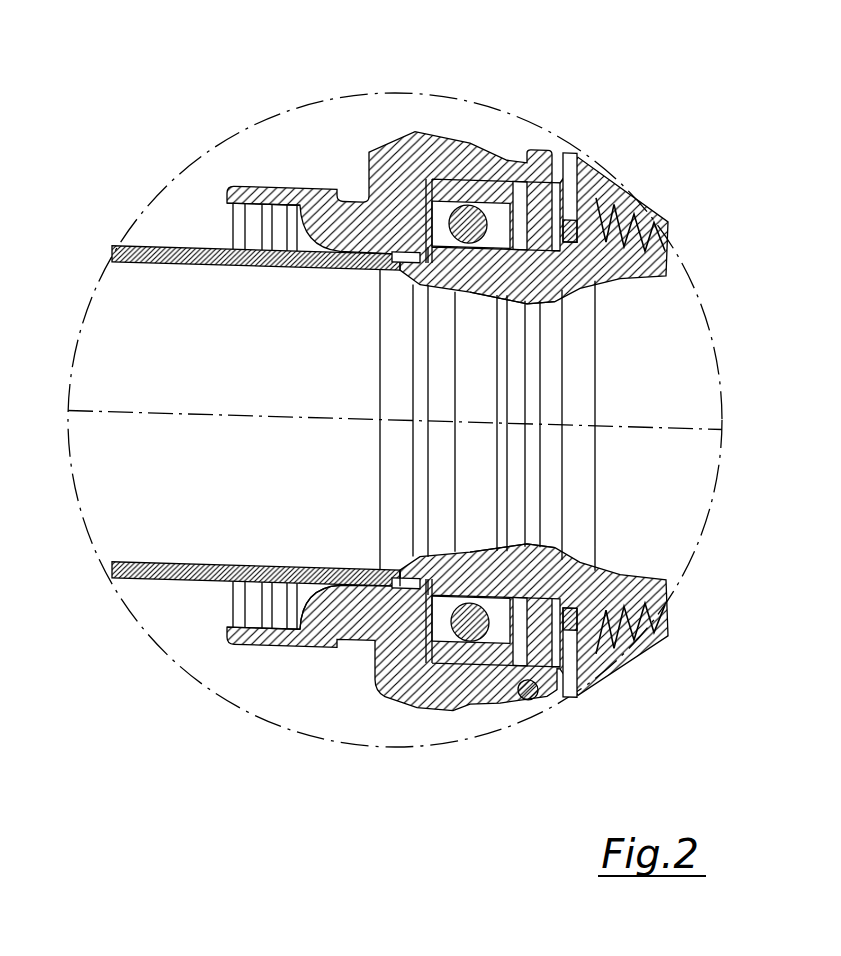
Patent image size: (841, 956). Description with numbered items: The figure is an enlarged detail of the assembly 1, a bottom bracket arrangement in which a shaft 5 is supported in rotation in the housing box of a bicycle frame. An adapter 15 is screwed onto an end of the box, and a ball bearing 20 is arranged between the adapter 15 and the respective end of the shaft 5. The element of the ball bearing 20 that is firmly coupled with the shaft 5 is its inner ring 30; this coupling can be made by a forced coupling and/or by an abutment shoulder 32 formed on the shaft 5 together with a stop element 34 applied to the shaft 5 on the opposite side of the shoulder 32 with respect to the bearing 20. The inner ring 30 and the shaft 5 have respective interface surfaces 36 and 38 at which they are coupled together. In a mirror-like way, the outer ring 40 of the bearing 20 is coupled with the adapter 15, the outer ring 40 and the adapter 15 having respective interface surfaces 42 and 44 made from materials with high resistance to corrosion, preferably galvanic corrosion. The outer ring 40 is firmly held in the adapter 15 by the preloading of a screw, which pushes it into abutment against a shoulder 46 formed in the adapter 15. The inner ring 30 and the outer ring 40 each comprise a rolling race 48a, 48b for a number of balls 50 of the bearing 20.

The assembly 1 is at (193, 103).
The shaft 5 is at (277, 264).
The adapter 15 is at (308, 190).
The ball bearing 20 is at (522, 215).
The inner ring 30 is at (485, 290).
The abutment shoulder 32 is at (560, 290).
The stop element 34 is at (423, 260).
The interface surface 36 is at (428, 255).
The interface surface 38 is at (369, 185).
The outer ring 40 is at (482, 695).
The interface surface 42 is at (383, 570).
The interface surface 44 is at (478, 665).
The shoulder 46 is at (403, 685).
The rolling race 48a is at (470, 205).
The rolling race 48b is at (493, 212).
The balls 50 is at (535, 592).